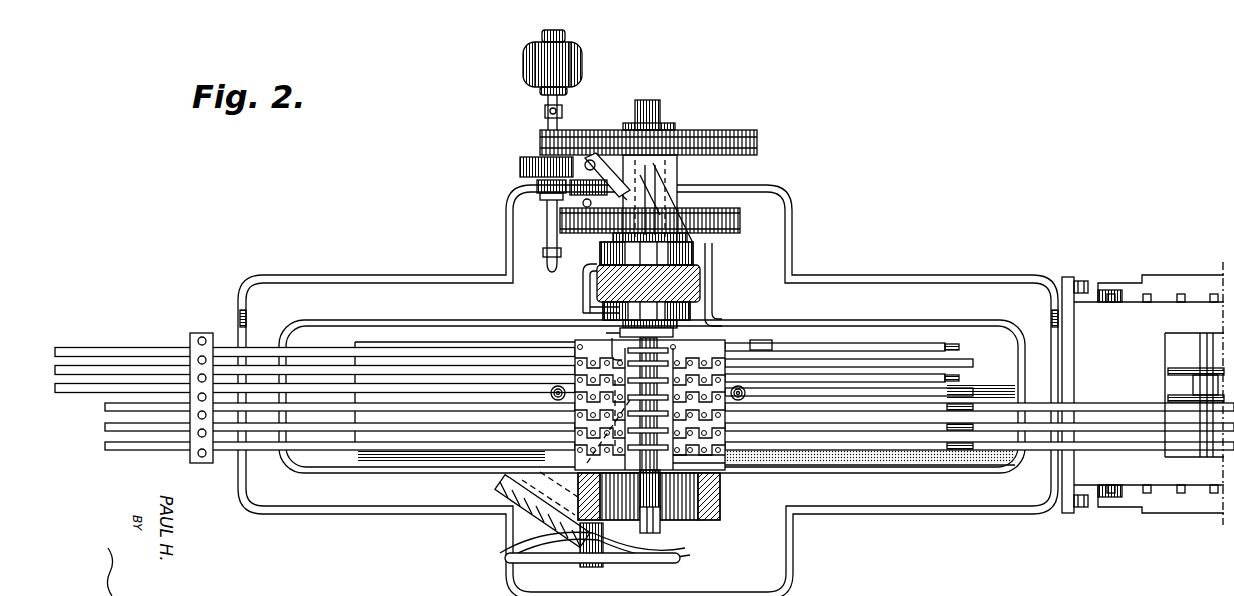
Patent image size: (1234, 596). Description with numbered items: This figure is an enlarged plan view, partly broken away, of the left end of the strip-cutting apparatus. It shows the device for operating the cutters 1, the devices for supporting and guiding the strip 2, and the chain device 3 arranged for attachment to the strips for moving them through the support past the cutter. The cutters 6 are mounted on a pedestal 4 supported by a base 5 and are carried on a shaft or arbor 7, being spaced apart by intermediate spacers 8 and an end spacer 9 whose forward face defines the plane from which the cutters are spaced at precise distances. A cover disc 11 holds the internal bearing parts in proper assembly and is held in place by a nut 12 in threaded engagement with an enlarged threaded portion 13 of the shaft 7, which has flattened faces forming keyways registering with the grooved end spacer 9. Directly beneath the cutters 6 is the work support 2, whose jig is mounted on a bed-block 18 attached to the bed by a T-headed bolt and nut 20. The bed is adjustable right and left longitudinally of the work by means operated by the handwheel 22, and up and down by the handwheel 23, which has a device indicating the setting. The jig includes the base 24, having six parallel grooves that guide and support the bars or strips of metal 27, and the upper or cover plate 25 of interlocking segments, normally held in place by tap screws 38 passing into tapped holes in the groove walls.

The device for operating the cutters 1 is at (598, 308).
The devices for supporting and guiding the strip 2 is at (408, 340).
The device including chains for moving the strip 3 is at (1192, 298).
The pedestal 4 is at (690, 283).
The base 5 is at (792, 263).
The cutters 6 is at (720, 478).
The shaft or arbor 7 is at (662, 540).
The intermediate spacers 8 is at (656, 472).
The end spacer 9 is at (611, 340).
The cover disc 11 is at (707, 312).
The nut 12 is at (713, 327).
The enlarged threaded portion 13 is at (684, 348).
The bed-block 18 is at (762, 342).
The T-headed bolt and nut 20 is at (557, 386).
The handwheel 22 is at (682, 558).
The handwheel 23 is at (545, 522).
The base of the jig 24 is at (578, 470).
The upper or cover plate 25 is at (725, 466).
The bars or strips of metal 27 is at (104, 443).
The tap screws 38 is at (683, 449).